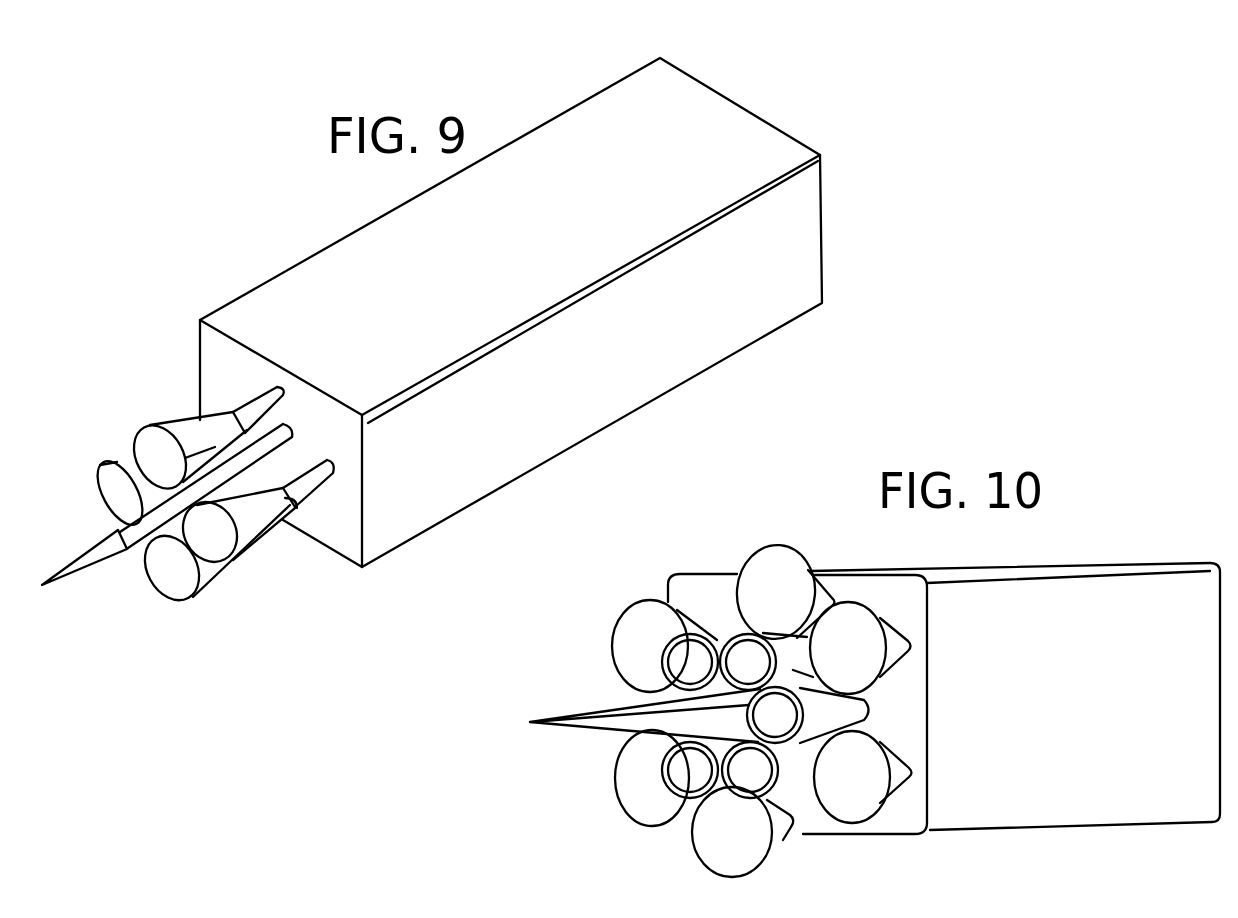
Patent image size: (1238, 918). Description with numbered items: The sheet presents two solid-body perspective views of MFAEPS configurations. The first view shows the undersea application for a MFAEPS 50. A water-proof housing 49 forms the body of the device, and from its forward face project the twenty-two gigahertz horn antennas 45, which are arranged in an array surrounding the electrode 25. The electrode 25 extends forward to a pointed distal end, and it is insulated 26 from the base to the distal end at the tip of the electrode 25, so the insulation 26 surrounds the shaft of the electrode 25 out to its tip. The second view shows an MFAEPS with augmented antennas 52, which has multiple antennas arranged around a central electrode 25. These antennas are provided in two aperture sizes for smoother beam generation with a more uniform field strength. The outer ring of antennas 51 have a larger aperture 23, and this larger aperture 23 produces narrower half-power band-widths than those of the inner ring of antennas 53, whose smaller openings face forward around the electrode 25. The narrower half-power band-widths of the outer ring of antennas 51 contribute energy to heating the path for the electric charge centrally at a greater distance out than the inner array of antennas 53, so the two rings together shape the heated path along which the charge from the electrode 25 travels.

In FIG. 10, the larger aperture 23 is at (790, 599).
In FIG. 9, the electrode 25 is at (80, 537).
In FIG. 10, the electrode 25 is at (600, 704).
In FIG. 9, the insulation 26 is at (130, 548).
In FIG. 9, the 22 GHz horn antennas 45 is at (147, 423).
In FIG. 9, the water-proof housing 49 is at (357, 278).
In FIG. 9, the MFAEPS undersea application 50 is at (612, 467).
In FIG. 10, the outer ring of antennas 51 is at (747, 552).
In FIG. 10, the MFAEPS with augmented antennas 52 is at (1058, 556).
In FIG. 10, the inner ring of antennas 53 is at (795, 787).